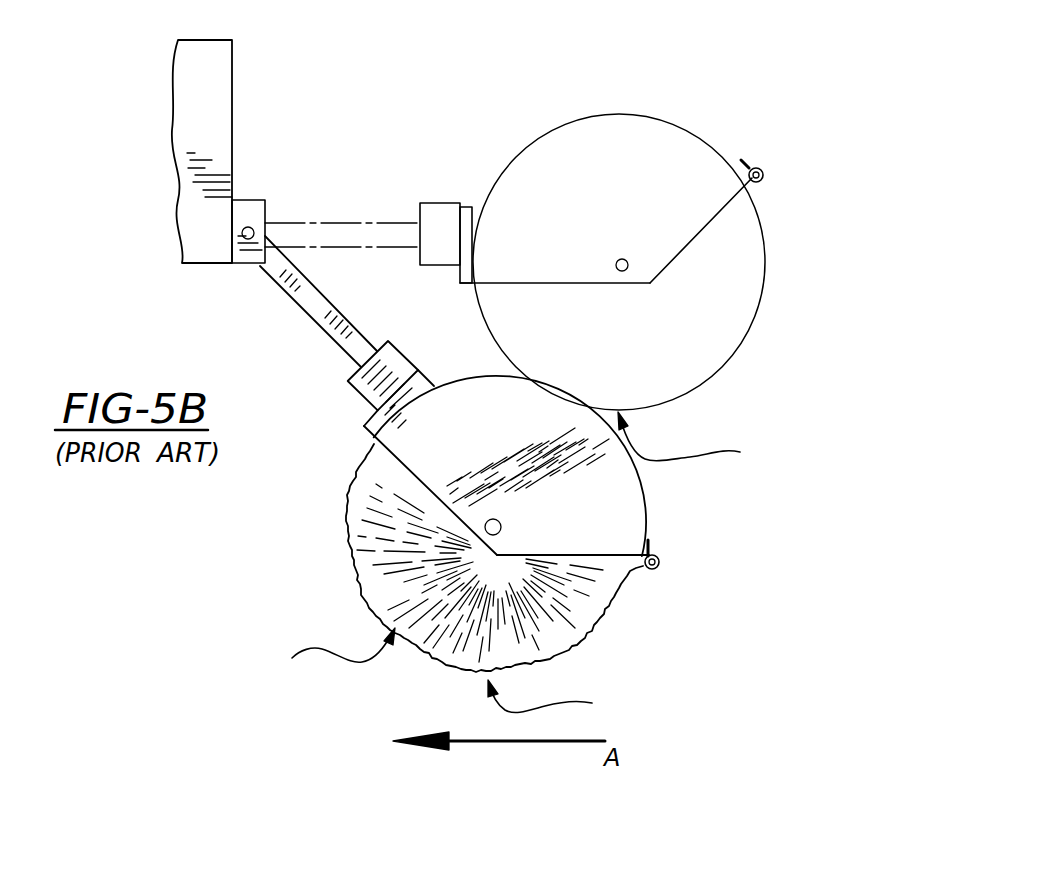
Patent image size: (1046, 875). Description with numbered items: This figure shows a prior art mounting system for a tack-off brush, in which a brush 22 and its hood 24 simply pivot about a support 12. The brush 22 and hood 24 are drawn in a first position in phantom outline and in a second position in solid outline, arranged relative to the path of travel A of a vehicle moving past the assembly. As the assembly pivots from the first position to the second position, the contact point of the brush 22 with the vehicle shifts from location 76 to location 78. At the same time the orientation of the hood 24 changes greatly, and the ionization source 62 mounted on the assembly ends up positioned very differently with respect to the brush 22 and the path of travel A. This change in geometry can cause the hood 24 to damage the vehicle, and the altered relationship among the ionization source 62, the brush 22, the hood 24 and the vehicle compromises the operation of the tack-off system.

The support 12 is at (222, 122).
The brush 22 is at (763, 260).
The hood 24 is at (554, 143).
The ionization source 62 is at (763, 165).
The contact point location 76 is at (511, 548).
The contact point location 78 is at (557, 702).